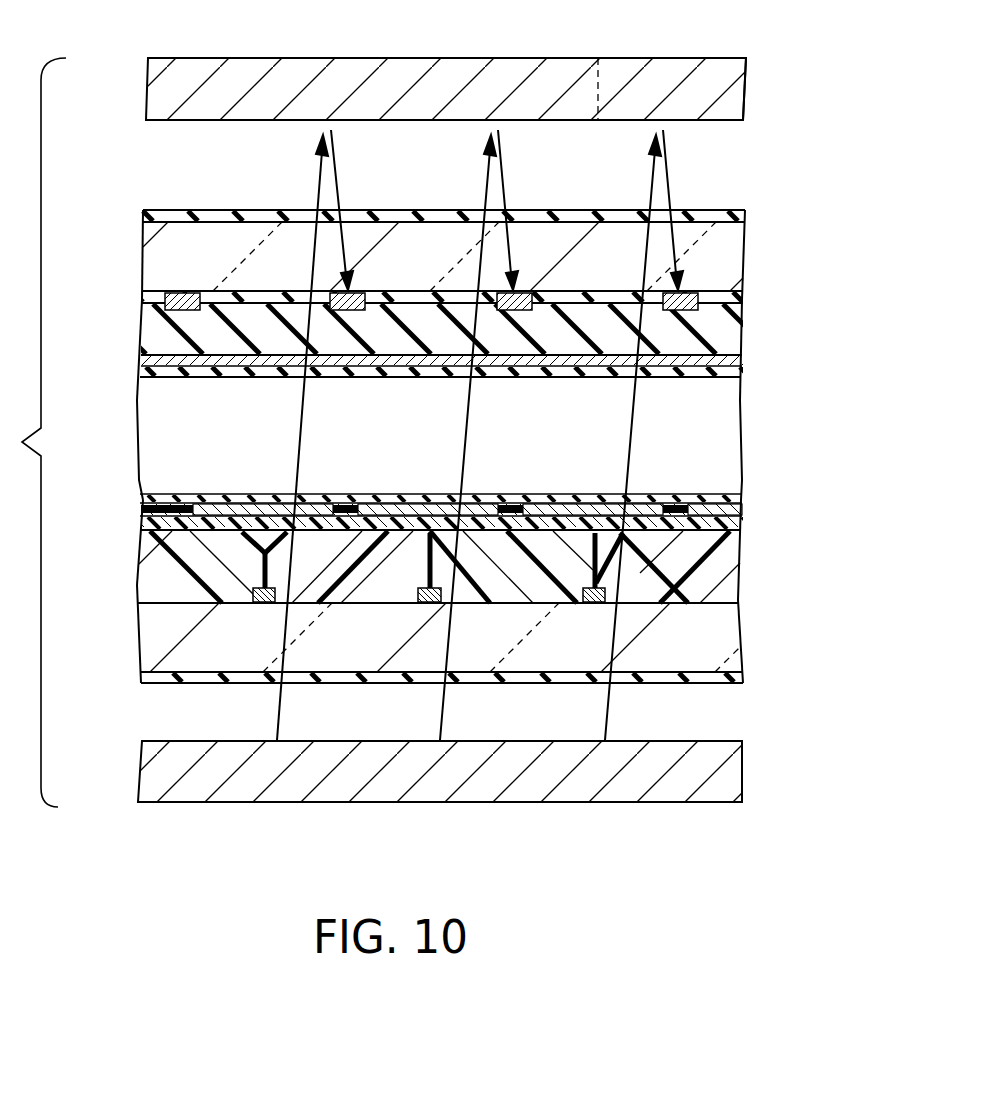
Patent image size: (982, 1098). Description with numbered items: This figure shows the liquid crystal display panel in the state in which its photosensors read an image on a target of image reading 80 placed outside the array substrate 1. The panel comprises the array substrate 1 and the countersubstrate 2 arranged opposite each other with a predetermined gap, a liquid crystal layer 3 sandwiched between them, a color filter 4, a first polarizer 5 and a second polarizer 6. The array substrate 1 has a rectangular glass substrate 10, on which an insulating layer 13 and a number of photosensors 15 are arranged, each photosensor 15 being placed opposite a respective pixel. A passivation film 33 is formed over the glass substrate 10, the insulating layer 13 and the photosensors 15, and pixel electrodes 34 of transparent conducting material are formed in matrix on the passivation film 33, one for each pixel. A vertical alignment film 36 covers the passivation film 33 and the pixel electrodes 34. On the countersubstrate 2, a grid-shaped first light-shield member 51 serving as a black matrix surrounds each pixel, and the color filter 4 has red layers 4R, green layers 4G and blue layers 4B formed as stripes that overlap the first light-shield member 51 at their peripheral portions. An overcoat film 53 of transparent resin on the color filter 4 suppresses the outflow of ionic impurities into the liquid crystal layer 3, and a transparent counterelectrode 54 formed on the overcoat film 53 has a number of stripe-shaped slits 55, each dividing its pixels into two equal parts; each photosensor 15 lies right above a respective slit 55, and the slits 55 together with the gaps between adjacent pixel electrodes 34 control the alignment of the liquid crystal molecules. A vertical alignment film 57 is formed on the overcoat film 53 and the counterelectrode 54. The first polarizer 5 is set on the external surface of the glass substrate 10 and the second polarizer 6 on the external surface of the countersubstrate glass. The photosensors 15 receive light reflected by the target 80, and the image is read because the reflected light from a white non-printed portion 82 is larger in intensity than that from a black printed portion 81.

The array substrate 1 is at (441, 319).
The countersubstrate 2 is at (439, 649).
The liquid crystal layer 3 is at (137, 425).
The color filter 4 is at (477, 691).
The red layer 4R is at (738, 566).
The green layer 4G is at (500, 588).
The blue layer 4B is at (302, 588).
The first polarizer 5 is at (745, 216).
The second polarizer 6 is at (639, 684).
The glass substrate 10 is at (742, 256).
The insulating layer 13 is at (742, 297).
The photosensor 15 is at (185, 293).
The passivation film 33 is at (740, 340).
The pixel electrode 34 is at (290, 371).
The alignment film 36 is at (408, 377).
The first light-shield member 51 is at (265, 604).
The overcoat film 53 is at (736, 525).
The counterelectrode 54 is at (740, 511).
The slit 55 is at (181, 503).
The alignment film 57 is at (745, 497).
The target of image reading 80 is at (147, 88).
The printed portion 81 is at (567, 75).
The non-printed portion 82 is at (704, 75).